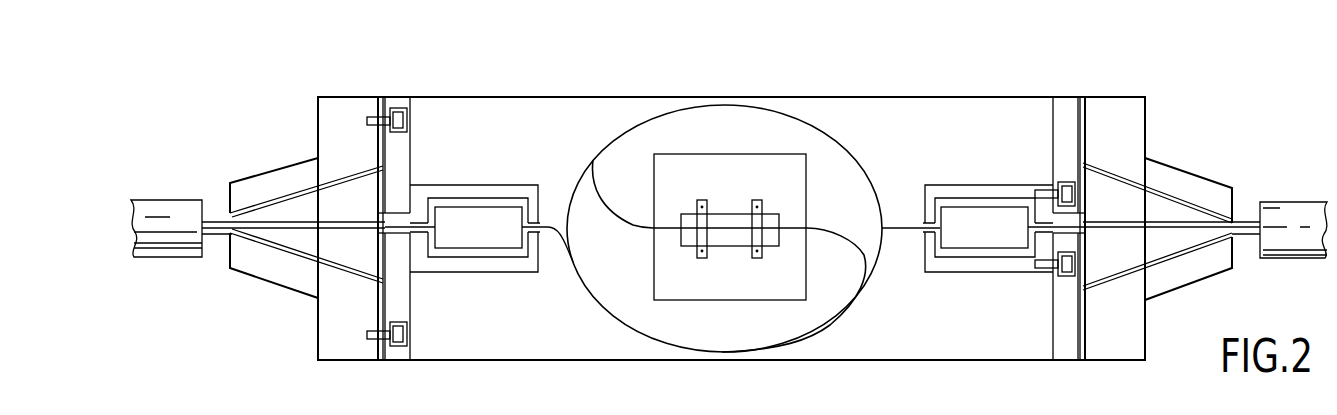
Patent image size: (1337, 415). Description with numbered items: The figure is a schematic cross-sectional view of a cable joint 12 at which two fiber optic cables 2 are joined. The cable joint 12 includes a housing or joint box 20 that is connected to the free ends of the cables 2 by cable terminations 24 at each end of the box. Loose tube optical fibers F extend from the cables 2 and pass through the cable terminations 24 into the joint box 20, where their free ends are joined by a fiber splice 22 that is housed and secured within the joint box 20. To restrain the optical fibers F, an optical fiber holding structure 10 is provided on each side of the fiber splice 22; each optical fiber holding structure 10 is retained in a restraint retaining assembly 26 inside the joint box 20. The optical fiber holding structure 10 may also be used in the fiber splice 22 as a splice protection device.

The fiber optic cable 2 is at (173, 199).
The optical fiber holding structure 10 is at (482, 222).
The cable joint 12 is at (612, 88).
The joint box 20 is at (478, 98).
The fiber splice 22 is at (732, 195).
The cable termination 24 is at (313, 130).
The restraint retaining assembly 26 is at (437, 295).
The optical fiber F is at (327, 223).